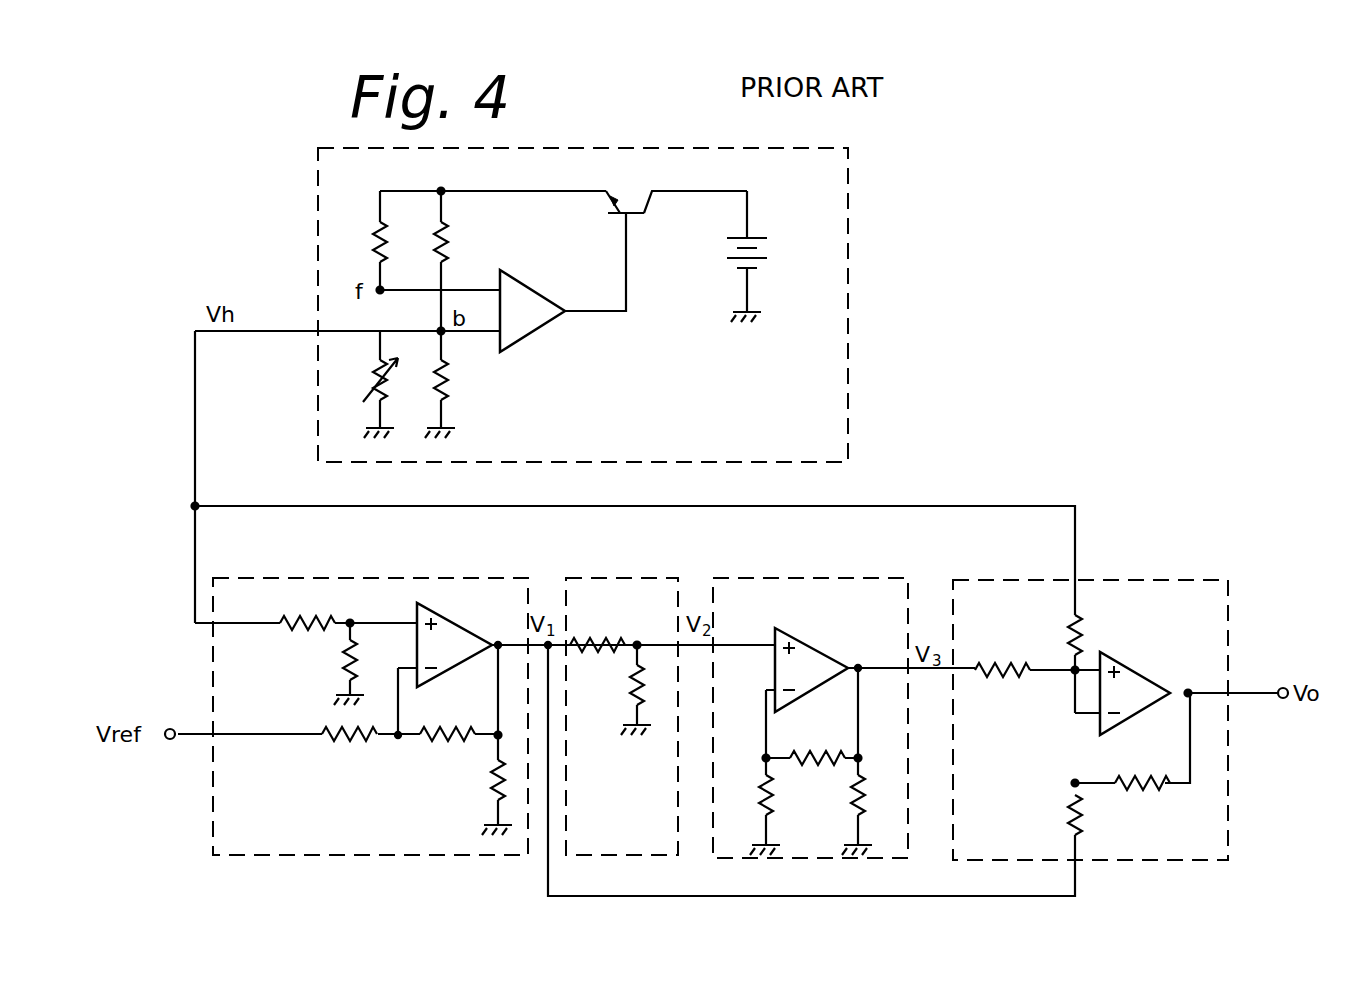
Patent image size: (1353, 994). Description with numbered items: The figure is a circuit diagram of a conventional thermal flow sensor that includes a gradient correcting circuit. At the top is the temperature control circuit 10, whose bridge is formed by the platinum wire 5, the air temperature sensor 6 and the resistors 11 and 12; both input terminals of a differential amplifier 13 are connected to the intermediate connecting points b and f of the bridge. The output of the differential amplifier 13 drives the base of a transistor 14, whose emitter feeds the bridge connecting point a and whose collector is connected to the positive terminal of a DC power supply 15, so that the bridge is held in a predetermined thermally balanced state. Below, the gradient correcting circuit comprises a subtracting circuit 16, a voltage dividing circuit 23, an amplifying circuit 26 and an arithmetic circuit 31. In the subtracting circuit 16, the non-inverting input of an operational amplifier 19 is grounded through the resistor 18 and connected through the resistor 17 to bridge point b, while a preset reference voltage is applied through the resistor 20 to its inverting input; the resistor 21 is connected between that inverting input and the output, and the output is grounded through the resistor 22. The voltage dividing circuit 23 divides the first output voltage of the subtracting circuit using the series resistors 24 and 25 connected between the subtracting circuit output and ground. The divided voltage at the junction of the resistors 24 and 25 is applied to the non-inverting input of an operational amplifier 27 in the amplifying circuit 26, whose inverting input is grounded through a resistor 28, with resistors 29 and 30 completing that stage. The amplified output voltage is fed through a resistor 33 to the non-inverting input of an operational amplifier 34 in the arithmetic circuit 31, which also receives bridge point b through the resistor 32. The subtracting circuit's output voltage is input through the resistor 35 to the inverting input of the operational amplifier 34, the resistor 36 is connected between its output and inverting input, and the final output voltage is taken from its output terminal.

The temperature control circuit 10 is at (649, 139).
The platinum wire 5 is at (450, 240).
The air temperature sensor 6 is at (384, 240).
The resistor 11 is at (380, 376).
The resistor 12 is at (443, 376).
The differential amplifier 13 is at (549, 328).
The transistor 14 is at (612, 209).
The DC power supply 15 is at (762, 256).
The subtracting circuit 16 is at (439, 563).
The resistor 17 is at (288, 627).
The resistor 18 is at (356, 657).
The operational amplifier 19 is at (585, 666).
The resistor 20 is at (318, 730).
The resistor 21 is at (446, 727).
The resistor 22 is at (486, 782).
The voltage dividing circuit 23 is at (639, 563).
The resistor 24 is at (600, 652).
The resistor 25 is at (648, 702).
The amplifying circuit 26 is at (823, 563).
The operational amplifier 27 is at (816, 650).
The resistor 28 is at (736, 788).
The resistor 29 is at (810, 750).
The resistor 30 is at (868, 794).
The arithmetic circuit 31 is at (1145, 559).
The resistor 32 is at (1064, 630).
The resistor 33 is at (1006, 662).
The operational amplifier 34 is at (1148, 686).
The resistor 35 is at (1068, 805).
The resistor 36 is at (1132, 778).